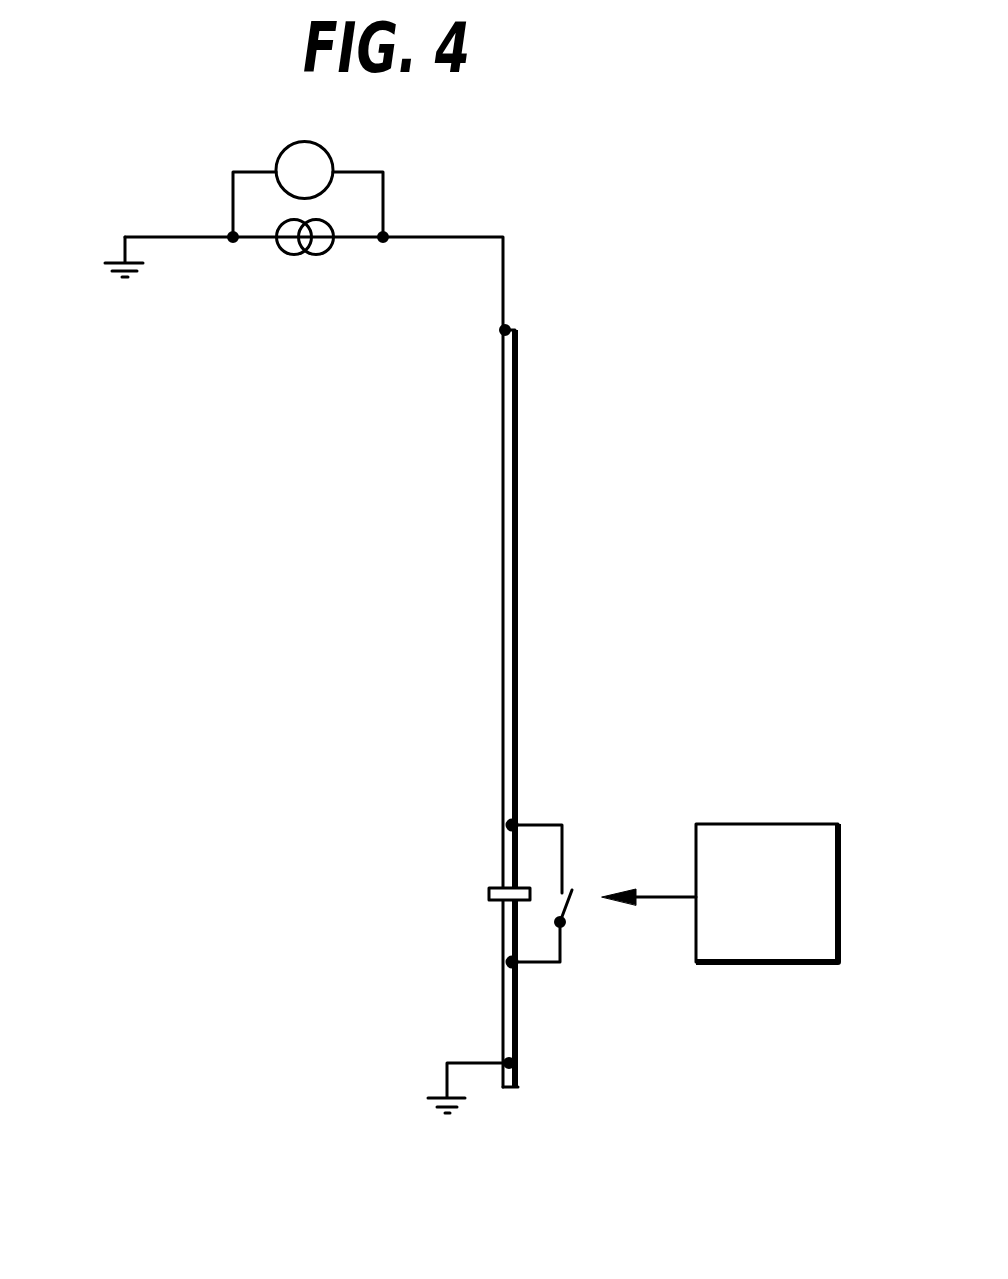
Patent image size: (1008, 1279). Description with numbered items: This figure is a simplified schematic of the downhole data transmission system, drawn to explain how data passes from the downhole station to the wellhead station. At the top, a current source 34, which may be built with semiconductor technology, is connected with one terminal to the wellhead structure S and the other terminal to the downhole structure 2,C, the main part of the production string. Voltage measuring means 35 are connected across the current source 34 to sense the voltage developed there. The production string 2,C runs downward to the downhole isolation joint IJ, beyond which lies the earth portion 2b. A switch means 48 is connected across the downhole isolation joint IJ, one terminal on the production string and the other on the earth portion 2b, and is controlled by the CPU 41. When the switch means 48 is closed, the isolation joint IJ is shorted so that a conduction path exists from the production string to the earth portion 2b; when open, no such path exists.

The wellhead structure S is at (123, 260).
The voltage measuring means 35 is at (322, 158).
The current source 34 is at (297, 253).
The downhole structure 2,C is at (510, 502).
The earth portion 2b is at (513, 1032).
The isolation joint IJ is at (494, 890).
The switch means 48 is at (577, 901).
The CPU 41 is at (818, 892).